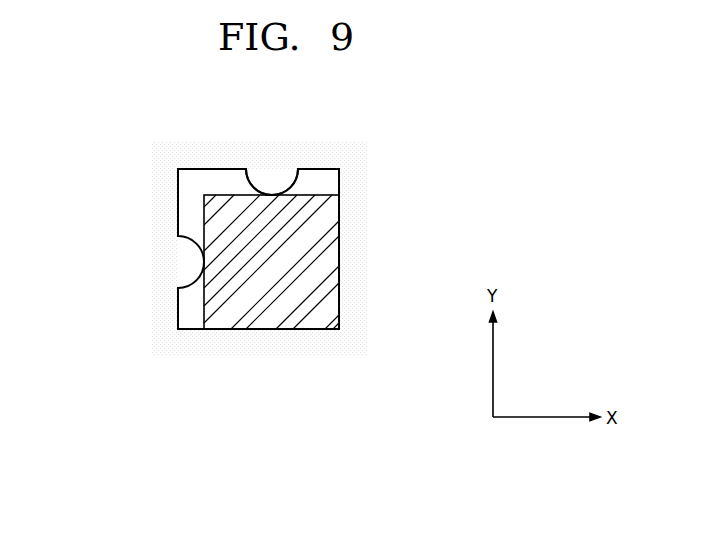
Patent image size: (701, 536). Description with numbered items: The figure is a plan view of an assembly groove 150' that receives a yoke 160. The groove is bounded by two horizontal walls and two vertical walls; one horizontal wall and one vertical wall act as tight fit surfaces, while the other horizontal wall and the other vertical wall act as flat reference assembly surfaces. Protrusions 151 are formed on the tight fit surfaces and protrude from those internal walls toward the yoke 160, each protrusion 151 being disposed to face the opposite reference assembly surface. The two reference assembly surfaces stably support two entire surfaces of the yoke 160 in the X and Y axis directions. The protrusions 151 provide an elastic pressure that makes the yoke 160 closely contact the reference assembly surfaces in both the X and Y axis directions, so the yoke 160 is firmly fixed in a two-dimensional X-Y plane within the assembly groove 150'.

The assembly groove 150' is at (258, 211).
The protrusions 151 is at (254, 186).
The yoke 160 is at (320, 233).